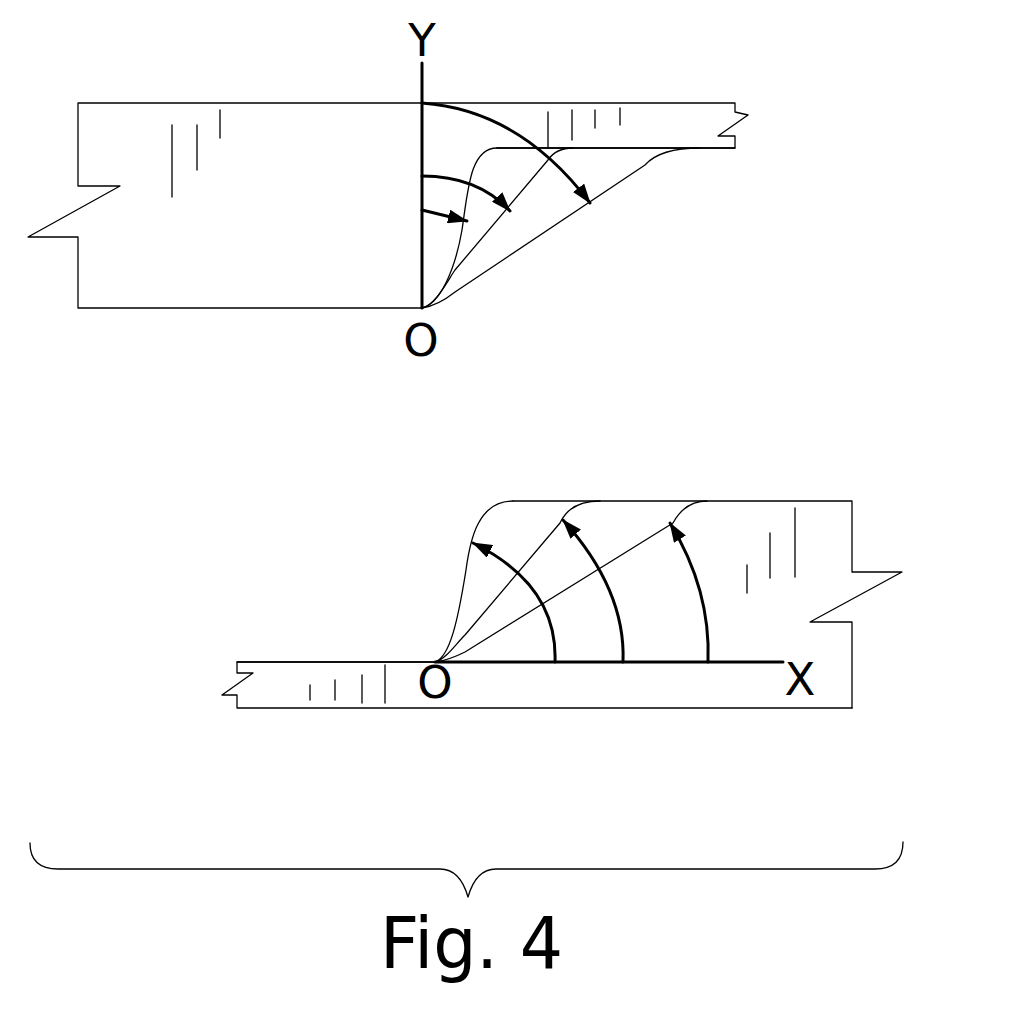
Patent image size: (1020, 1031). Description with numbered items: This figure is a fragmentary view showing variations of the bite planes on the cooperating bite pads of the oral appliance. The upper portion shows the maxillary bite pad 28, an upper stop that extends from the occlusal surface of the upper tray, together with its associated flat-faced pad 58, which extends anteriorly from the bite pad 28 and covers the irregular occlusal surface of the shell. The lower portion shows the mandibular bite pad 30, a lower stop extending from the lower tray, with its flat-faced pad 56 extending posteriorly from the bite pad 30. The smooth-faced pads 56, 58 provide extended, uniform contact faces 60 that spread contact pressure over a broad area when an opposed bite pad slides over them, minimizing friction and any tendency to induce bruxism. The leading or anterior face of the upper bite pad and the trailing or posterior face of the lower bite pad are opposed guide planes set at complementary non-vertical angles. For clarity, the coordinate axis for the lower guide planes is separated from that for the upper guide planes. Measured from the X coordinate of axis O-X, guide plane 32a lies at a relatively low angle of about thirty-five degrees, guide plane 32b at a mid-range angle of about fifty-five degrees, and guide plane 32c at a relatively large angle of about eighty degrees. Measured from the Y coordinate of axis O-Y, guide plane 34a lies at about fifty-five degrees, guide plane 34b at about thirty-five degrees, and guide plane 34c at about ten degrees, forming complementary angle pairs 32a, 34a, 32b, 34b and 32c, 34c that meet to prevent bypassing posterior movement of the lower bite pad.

The maxillary bite pad 28 is at (118, 308).
The flat-faced pad 58 is at (670, 118).
The contact face 60 is at (722, 150).
The guide plane 34a is at (590, 203).
The guide plane 34b is at (510, 211).
The guide plane 34c is at (467, 221).
The flat-faced pad 56 is at (287, 690).
The mandibular bite pad 30 is at (807, 501).
The guide plane 32a is at (667, 527).
The guide plane 32b is at (553, 535).
The guide plane 32c is at (475, 543).